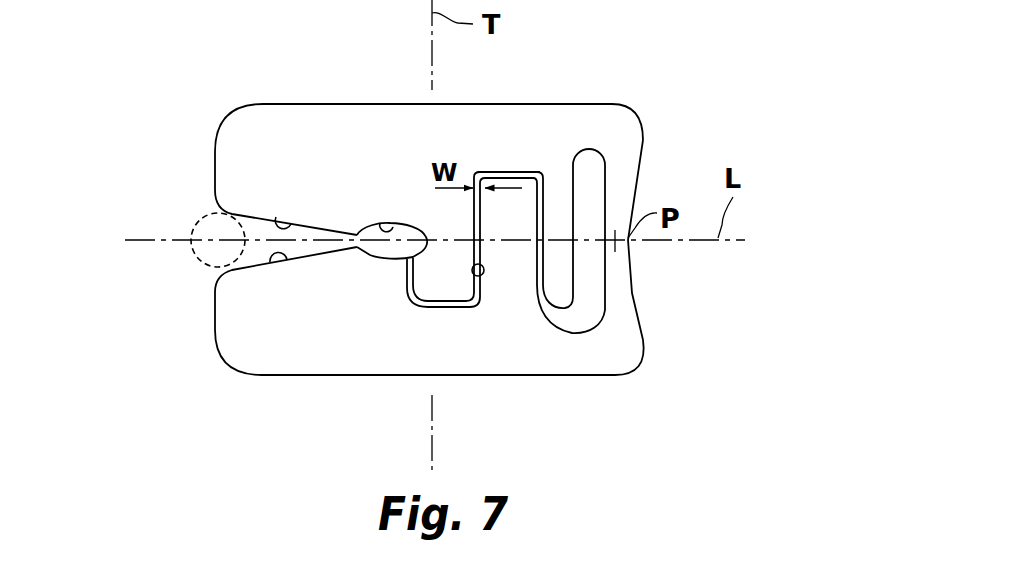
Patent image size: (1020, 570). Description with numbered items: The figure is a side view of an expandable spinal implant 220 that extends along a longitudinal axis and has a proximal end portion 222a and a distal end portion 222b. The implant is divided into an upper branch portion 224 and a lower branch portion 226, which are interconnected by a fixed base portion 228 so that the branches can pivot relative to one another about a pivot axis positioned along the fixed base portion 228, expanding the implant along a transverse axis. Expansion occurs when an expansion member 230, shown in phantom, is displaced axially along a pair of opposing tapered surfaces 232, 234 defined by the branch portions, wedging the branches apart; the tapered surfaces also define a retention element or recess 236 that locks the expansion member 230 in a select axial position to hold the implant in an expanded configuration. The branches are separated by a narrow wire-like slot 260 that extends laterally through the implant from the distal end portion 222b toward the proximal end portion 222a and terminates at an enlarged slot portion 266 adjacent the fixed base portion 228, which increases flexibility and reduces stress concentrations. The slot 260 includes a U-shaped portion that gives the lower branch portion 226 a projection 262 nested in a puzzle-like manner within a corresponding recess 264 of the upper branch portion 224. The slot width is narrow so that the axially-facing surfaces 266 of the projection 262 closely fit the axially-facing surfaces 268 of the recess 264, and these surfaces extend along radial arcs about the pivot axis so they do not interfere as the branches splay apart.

The expandable spinal implant 220 is at (291, 66).
The proximal end portion 222a is at (680, 326).
The distal end portion 222b is at (197, 175).
The upper branch portion 224 is at (543, 70).
The lower branch portion 226 is at (392, 398).
The fixed base portion 228 is at (630, 196).
The expansion member 230 is at (198, 270).
The tapered surface 232 is at (280, 216).
The tapered surface 234 is at (280, 264).
The retention element or recess 236 is at (382, 221).
The slot 260 is at (455, 318).
The projection 262 is at (517, 177).
The recess 264 is at (530, 233).
The enlarged slot portion / axially-facing surfaces of the projection 266 is at (474, 230).
The axially-facing surfaces of the recess 268 is at (476, 270).